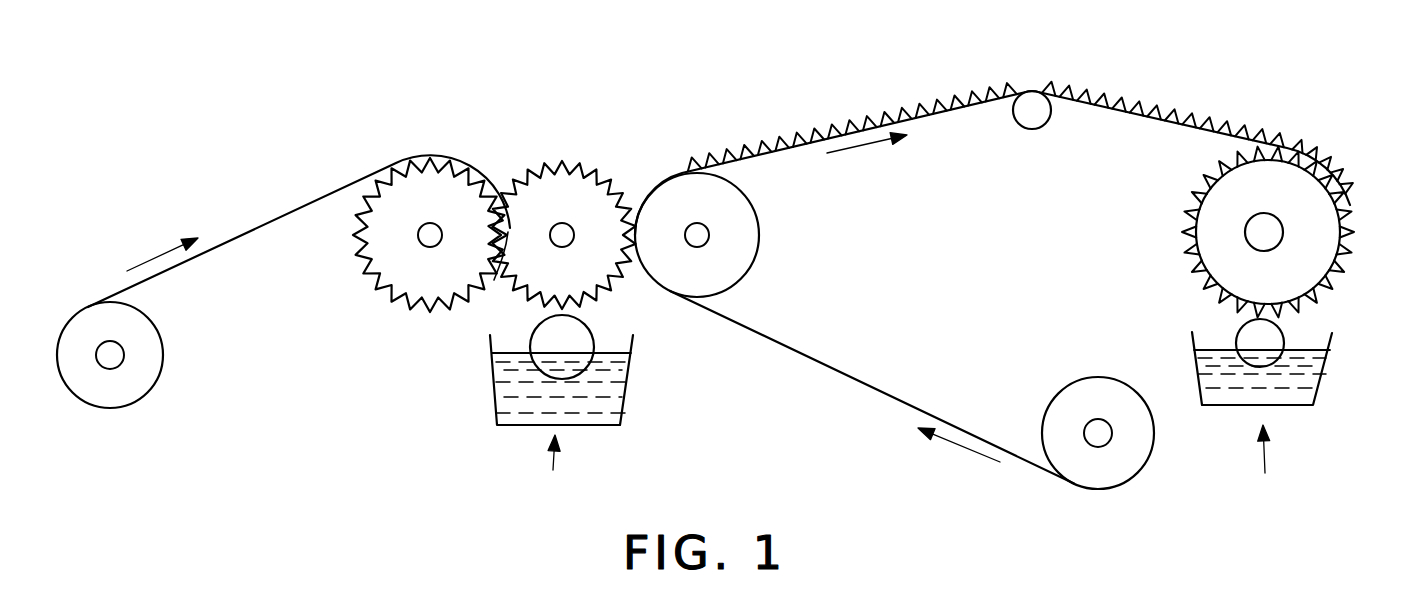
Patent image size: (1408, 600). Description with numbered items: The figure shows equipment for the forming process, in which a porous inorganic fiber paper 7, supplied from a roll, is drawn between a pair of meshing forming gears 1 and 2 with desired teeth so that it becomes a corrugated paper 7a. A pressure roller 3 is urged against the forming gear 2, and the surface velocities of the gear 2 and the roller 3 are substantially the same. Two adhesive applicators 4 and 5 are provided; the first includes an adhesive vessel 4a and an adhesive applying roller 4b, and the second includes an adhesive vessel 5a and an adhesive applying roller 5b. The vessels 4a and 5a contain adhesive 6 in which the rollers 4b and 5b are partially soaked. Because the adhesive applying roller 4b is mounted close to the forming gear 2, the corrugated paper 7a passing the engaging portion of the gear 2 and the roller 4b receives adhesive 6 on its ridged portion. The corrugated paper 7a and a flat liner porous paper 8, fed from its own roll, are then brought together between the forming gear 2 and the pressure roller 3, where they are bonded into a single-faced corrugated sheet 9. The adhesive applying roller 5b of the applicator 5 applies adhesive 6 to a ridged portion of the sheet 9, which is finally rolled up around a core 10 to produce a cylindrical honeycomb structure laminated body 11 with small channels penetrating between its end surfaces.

The forming gear 1 is at (437, 190).
The forming gear 2 is at (576, 188).
The pressure roller 3 is at (688, 190).
The adhesive applicator 4 is at (540, 503).
The adhesive vessel 4a is at (492, 395).
The adhesive applying roller 4b is at (593, 323).
The adhesive applicator 5 is at (1276, 508).
The adhesive vessel 5a is at (1197, 380).
The adhesive applying roller 5b is at (1283, 335).
The adhesive 6 is at (615, 403).
The porous inorganic fiber paper 7 is at (245, 235).
The corrugated paper 7a is at (507, 278).
The flat liner porous paper 8 is at (862, 383).
The single-faced corrugated sheet 9 is at (900, 110).
The core 10 is at (1270, 232).
The cylindrical honeycomb structure laminated body 11 is at (1290, 186).